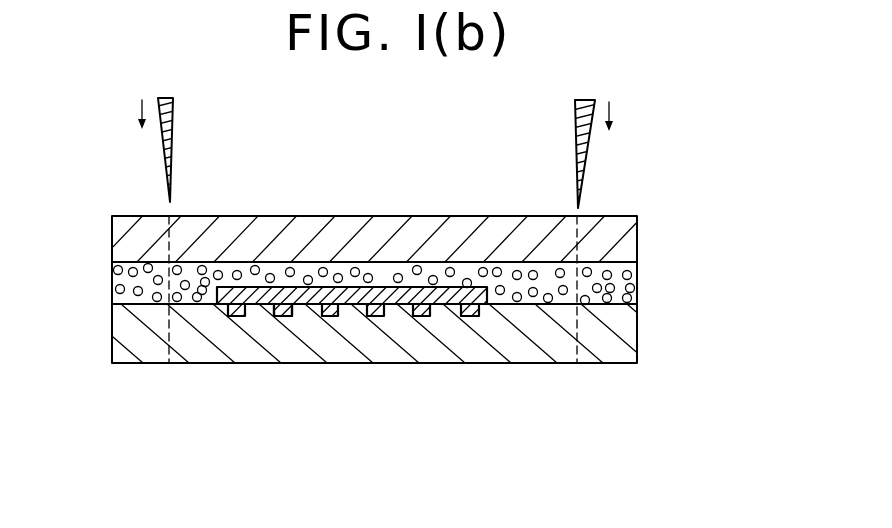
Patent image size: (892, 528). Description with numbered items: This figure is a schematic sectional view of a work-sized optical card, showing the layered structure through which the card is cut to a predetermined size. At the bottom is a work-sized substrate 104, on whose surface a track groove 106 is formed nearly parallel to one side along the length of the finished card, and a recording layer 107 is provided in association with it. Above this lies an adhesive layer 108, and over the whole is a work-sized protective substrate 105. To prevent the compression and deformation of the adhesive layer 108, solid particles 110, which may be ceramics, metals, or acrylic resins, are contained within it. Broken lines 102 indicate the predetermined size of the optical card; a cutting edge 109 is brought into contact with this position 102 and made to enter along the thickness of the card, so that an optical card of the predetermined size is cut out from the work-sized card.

The broken line indicating predetermined size 102 is at (176, 233).
The substrate 104 is at (637, 328).
The protective substrate 105 is at (637, 245).
The track groove 106 is at (330, 322).
The recording layer 107 is at (278, 317).
The adhesive layer 108 is at (637, 288).
The cutting edge 109 is at (172, 125).
The solid particles 110 is at (116, 289).